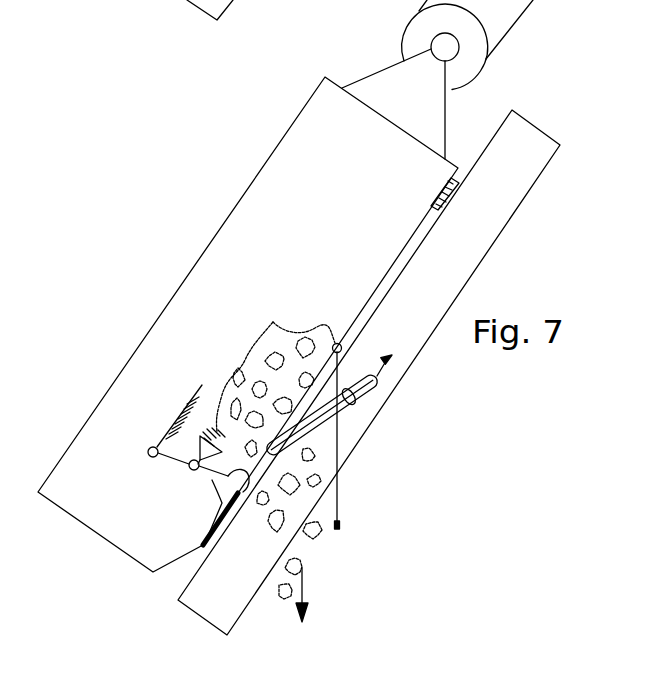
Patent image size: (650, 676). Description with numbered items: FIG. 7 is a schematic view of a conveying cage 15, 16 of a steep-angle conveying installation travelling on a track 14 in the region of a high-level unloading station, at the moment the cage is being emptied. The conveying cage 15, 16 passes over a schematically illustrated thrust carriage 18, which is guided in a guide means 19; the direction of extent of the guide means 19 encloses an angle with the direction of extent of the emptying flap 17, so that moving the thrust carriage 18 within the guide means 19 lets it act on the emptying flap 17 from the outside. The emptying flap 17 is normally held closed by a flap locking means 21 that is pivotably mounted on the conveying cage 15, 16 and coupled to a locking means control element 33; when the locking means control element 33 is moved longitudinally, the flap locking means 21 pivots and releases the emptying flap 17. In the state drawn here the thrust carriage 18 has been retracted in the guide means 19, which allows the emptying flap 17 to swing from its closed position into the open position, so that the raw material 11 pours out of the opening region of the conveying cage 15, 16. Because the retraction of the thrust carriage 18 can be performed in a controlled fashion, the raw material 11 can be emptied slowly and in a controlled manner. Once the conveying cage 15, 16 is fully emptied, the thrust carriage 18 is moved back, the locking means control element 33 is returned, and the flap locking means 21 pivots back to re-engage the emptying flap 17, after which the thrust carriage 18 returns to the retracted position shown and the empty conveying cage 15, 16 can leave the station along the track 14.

The raw material 11 is at (275, 333).
The track 14 is at (492, 248).
The conveying cage 15 is at (248, 324).
The conveying cage 16 is at (220, 214).
The emptying flap 17 is at (340, 487).
The thrust carriage 18 is at (347, 404).
The guide means 19 is at (388, 358).
The flap locking means 21 is at (175, 462).
The locking means control element 33 is at (158, 445).